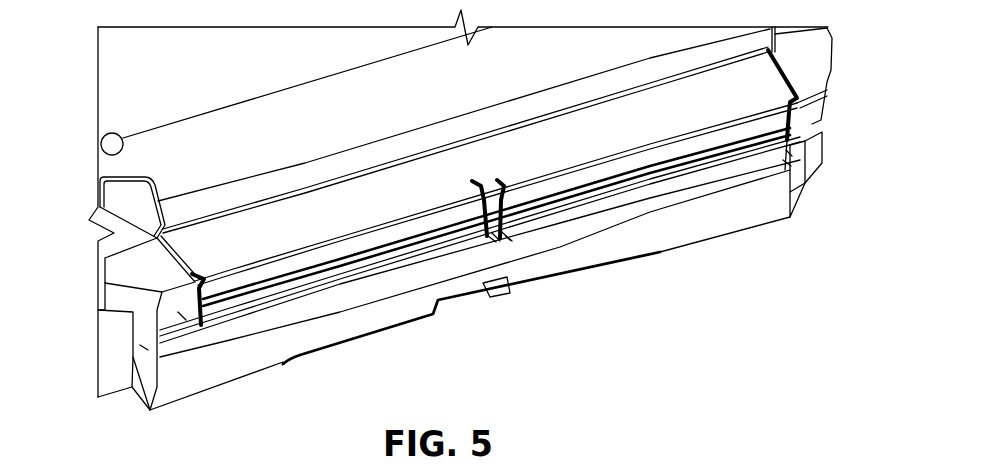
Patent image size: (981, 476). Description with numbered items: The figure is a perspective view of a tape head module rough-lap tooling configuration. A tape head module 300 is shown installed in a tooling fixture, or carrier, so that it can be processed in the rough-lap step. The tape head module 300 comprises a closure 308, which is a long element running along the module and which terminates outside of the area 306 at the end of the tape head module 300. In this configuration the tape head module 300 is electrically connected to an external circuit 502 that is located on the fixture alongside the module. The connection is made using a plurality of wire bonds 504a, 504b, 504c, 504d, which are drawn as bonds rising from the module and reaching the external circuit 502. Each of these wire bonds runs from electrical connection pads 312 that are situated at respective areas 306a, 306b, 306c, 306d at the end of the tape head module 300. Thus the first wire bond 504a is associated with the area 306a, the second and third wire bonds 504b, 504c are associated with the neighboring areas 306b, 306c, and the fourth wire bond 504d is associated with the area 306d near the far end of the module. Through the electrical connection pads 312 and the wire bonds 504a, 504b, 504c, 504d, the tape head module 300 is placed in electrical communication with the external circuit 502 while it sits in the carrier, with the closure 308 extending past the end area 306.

The tape head module 300 is at (370, 280).
The area at the end of tape head module 306 is at (150, 410).
The area at the end of tape head module 306a is at (180, 313).
The area at the end of tape head module 306b is at (497, 235).
The area at the end of tape head module 306c is at (506, 236).
The area at the end of tape head module 306d is at (792, 137).
The closure 308 is at (340, 262).
The electrical connection pads 312 is at (142, 347).
The external circuit 502 is at (310, 237).
The wire bond 504a is at (198, 278).
The wire bond 504b is at (475, 190).
The wire bond 504c is at (505, 185).
The wire bond 504d is at (778, 98).